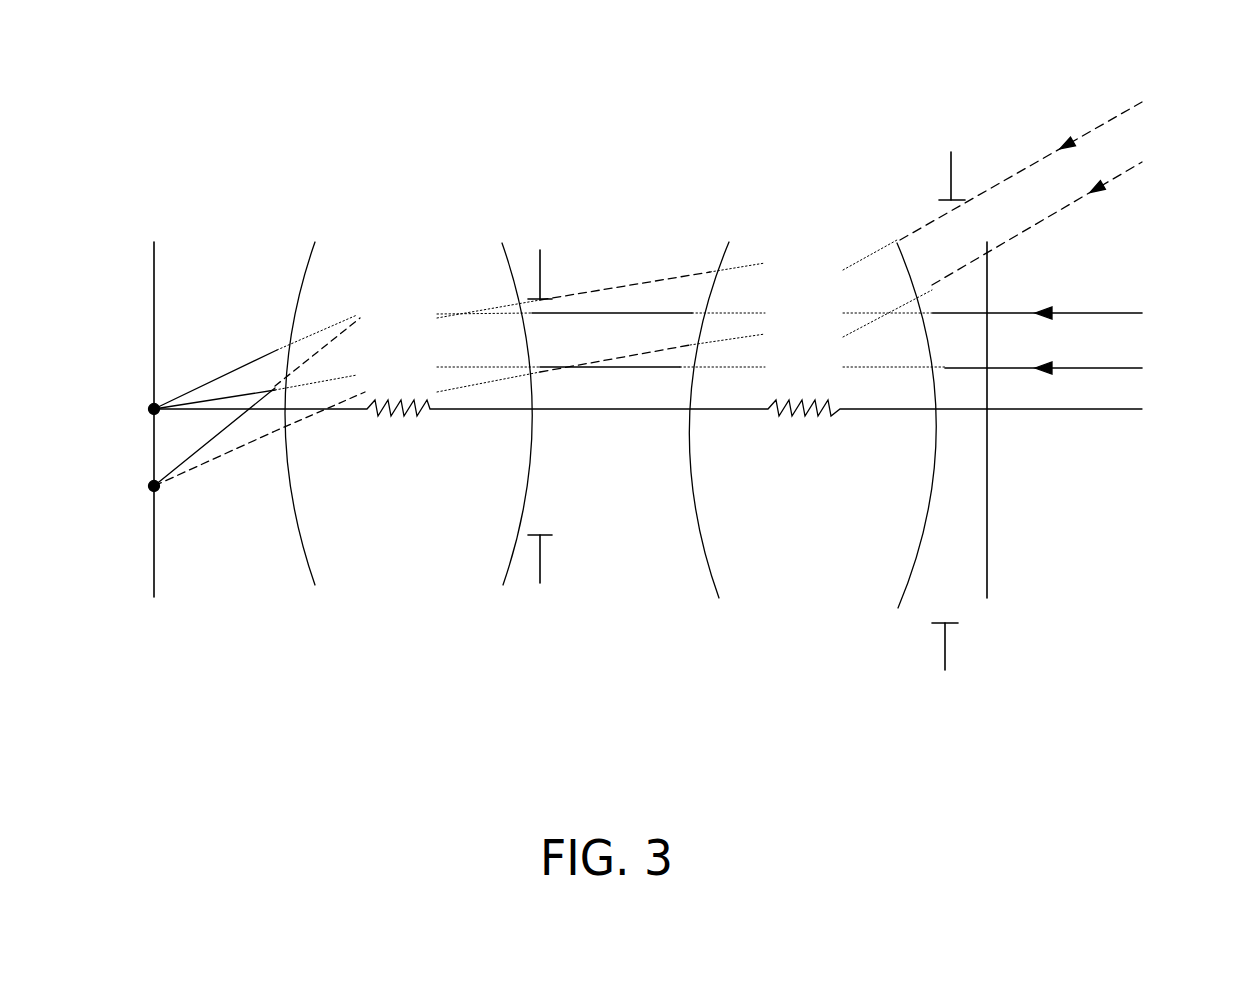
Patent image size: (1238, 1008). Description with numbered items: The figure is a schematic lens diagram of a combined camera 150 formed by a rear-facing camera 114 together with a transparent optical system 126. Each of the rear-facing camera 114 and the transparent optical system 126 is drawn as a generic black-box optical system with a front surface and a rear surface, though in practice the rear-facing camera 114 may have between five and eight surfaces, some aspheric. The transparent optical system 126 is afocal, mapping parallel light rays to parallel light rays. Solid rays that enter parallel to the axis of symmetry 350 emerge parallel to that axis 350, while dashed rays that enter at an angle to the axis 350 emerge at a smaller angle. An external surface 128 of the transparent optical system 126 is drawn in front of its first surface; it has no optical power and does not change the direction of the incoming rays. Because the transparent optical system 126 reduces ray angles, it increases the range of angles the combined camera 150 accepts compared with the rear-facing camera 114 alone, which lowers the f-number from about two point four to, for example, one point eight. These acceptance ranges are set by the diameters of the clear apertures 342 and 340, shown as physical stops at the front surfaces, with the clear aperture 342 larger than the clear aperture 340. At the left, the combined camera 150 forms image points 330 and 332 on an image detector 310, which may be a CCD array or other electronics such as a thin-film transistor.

The combined camera 150 is at (200, 134).
The rear-facing camera 114 is at (392, 208).
The transparent optical system 126 is at (823, 214).
The external surface 128 is at (987, 565).
The image detector 310 is at (155, 577).
The image point 330 is at (152, 405).
The image point 332 is at (153, 492).
The clear aperture 340 is at (540, 262).
The clear aperture 342 is at (955, 182).
The axis of symmetry 350 is at (1072, 411).